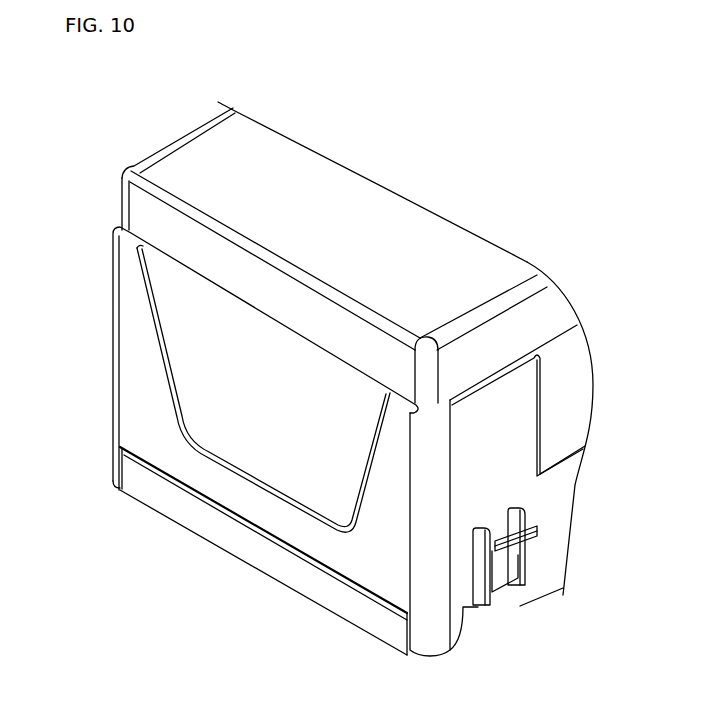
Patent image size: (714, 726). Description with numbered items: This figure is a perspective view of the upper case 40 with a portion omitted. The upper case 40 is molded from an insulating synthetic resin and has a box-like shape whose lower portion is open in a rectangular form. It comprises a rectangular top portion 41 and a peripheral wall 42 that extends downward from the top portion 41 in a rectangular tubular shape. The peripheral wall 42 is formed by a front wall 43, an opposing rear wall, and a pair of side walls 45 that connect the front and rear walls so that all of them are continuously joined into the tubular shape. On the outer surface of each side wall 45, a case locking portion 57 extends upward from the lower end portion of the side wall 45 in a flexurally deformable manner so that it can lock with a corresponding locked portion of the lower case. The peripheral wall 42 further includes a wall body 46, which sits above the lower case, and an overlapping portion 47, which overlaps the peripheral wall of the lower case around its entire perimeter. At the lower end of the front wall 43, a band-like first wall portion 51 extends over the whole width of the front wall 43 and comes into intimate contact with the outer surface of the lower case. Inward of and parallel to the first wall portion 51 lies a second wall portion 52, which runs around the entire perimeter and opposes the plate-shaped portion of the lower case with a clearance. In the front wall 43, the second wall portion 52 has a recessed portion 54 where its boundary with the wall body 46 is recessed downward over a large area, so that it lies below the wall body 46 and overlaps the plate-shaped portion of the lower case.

The upper case 40 is at (470, 142).
The top portion 41 is at (253, 145).
The peripheral wall 42 is at (88, 427).
The front wall 43 is at (182, 327).
The side wall 45 is at (573, 372).
The wall body 46 is at (337, 477).
The overlapping portion 47 is at (372, 557).
The first wall portion 51 is at (257, 548).
The second wall portion 52 is at (120, 490).
The recessed portion 54 is at (250, 483).
The case locking portion 57 is at (497, 557).